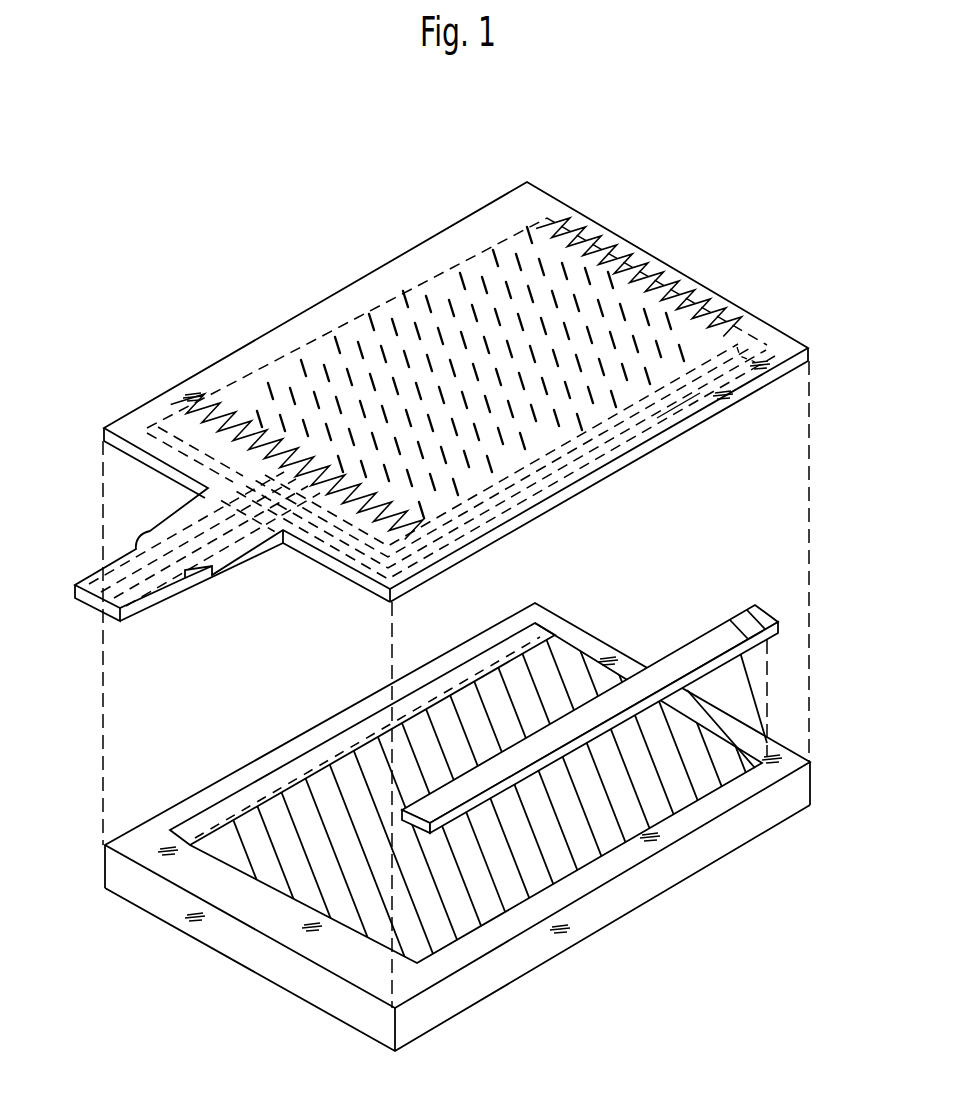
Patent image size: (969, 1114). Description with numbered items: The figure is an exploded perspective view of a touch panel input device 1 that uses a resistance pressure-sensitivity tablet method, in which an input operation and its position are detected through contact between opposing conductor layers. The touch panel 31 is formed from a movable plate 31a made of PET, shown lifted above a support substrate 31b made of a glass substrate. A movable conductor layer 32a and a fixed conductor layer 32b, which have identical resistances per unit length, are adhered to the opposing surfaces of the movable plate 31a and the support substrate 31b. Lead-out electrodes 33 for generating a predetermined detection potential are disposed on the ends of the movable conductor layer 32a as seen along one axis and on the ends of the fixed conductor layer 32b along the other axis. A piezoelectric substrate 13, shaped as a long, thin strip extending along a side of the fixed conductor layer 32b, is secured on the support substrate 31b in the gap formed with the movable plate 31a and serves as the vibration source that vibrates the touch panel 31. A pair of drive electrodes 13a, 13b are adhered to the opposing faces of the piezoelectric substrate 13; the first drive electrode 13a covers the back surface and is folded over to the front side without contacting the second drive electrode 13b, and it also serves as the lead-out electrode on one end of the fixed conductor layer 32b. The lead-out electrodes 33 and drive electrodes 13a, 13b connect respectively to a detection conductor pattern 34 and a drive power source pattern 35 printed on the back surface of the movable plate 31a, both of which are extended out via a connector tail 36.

The touch panel input device 1 is at (610, 179).
The piezoelectric substrate 13 is at (637, 707).
The first drive electrode 13a is at (771, 762).
The second drive electrode 13b is at (695, 652).
The touch panel 31 is at (633, 521).
The movable plate 31a is at (552, 506).
The support substrate 31b is at (557, 630).
The movable conductor layer 32a is at (400, 330).
The fixed conductor layer 32b is at (547, 838).
The lead-out electrodes 33 is at (592, 246).
The detection conductor pattern 34 is at (737, 347).
The drive power source pattern 35 is at (750, 362).
The connector tail 36 is at (150, 600).